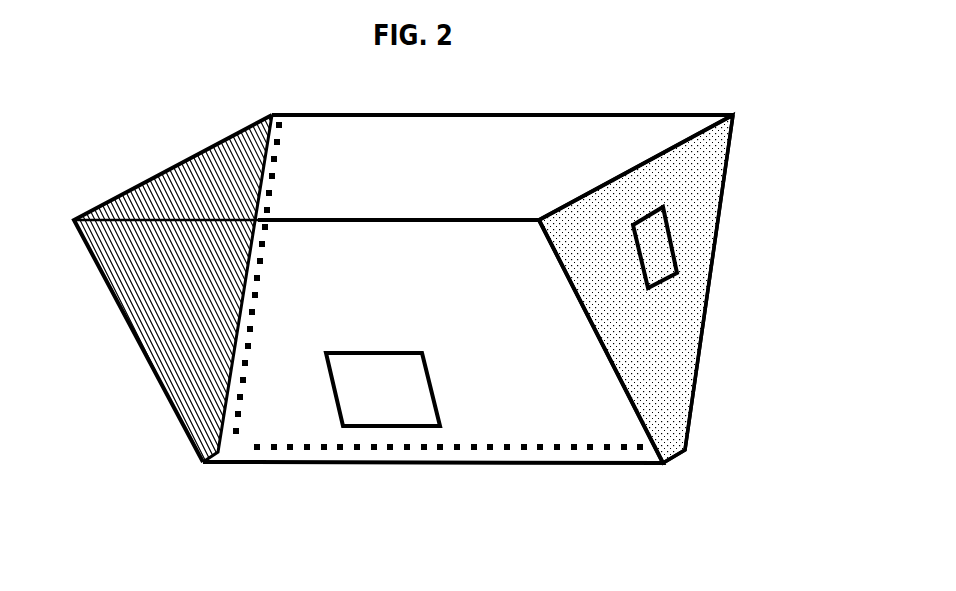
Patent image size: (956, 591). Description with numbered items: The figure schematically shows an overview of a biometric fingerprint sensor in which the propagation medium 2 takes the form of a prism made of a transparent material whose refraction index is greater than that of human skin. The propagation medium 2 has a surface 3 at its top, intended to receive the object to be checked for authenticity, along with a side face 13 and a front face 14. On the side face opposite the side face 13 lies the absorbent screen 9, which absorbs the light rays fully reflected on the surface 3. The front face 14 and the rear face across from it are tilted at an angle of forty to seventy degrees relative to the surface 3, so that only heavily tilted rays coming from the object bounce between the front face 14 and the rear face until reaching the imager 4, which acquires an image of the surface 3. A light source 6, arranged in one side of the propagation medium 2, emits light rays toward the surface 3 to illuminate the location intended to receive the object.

The propagation medium 2 is at (705, 177).
The surface 3 is at (597, 152).
The imager 4 is at (385, 423).
The light source 6 is at (672, 245).
The absorbent screen 9 is at (137, 330).
The side face 13 is at (685, 346).
The front face 14 is at (541, 422).